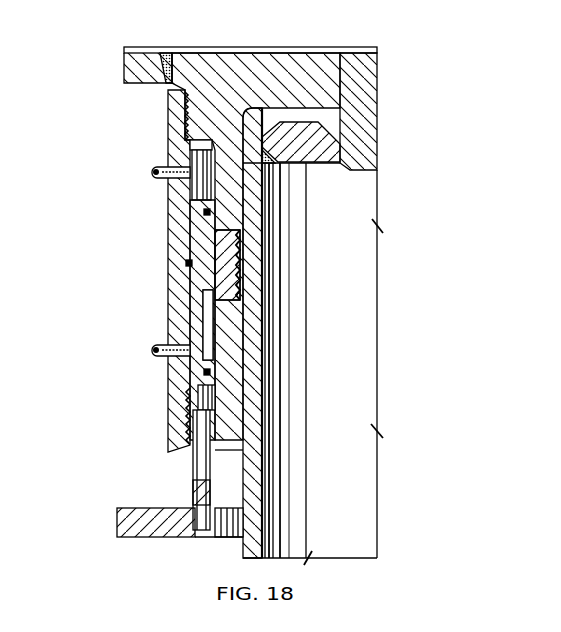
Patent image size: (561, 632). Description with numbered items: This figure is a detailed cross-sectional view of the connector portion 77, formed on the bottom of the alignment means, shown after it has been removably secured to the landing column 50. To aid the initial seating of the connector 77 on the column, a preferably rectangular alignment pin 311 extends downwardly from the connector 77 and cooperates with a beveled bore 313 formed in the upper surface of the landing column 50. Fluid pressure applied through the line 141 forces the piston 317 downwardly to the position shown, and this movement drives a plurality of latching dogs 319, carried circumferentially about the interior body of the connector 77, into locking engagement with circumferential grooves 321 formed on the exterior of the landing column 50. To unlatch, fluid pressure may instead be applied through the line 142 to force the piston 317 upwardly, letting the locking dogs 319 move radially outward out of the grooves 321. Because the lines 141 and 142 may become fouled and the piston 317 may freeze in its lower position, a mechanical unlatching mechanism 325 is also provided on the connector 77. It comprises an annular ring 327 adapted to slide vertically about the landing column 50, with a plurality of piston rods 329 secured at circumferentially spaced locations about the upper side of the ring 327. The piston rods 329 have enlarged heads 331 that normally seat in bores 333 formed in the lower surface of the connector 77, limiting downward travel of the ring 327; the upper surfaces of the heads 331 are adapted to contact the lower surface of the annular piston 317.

The connector portion 77 is at (262, 62).
The alignment pin 311 is at (365, 92).
The beveled bore 313 is at (335, 111).
The piston 317 is at (198, 232).
The latching dogs 319 is at (238, 244).
The circumferential grooves 321 is at (238, 284).
The landing column 50 is at (263, 372).
The fluid line 141 is at (163, 172).
The fluid line 142 is at (163, 347).
The enlarged heads 331 is at (202, 397).
The bores 333 is at (190, 428).
The piston rods 329 is at (200, 461).
The mechanical unlatching mechanism 325 is at (157, 504).
The annular ring 327 is at (140, 530).